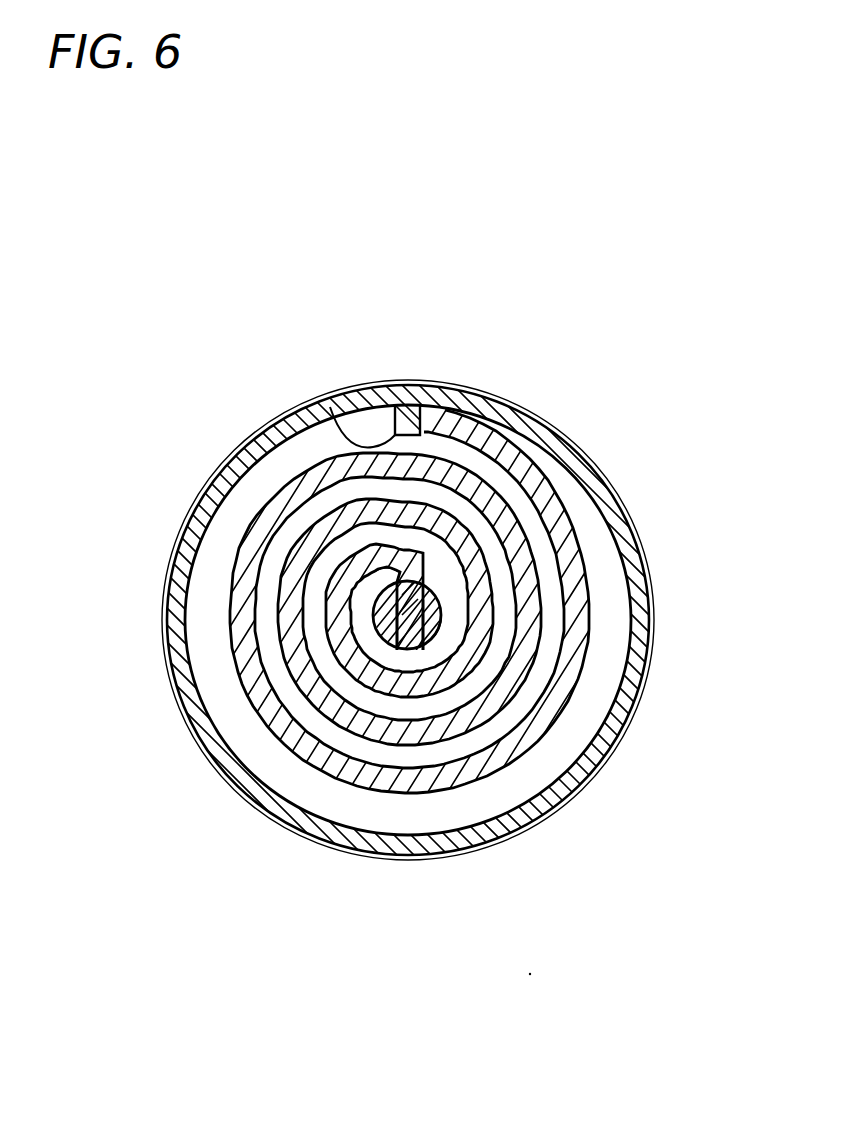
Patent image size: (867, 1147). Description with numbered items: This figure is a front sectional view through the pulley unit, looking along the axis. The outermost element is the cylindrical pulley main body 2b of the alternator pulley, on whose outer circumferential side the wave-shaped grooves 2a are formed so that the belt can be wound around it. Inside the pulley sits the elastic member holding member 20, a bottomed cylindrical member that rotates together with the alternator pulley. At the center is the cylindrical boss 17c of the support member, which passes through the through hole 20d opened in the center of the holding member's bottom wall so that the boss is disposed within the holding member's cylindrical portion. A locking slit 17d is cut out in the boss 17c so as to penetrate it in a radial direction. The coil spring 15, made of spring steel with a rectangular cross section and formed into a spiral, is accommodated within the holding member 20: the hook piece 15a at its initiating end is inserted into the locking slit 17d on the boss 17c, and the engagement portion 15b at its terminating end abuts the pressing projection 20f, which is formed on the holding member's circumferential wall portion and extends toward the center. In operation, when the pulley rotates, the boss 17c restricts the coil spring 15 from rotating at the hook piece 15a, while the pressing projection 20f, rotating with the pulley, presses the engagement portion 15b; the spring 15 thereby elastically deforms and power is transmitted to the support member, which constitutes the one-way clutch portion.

The wave-shaped grooves 2a is at (540, 434).
The pulley main body 2b is at (283, 464).
The coil spring 15 is at (567, 538).
The hook piece 15a is at (410, 606).
The engagement portion 15b is at (421, 398).
The cylindrical boss 17c is at (445, 634).
The locking slit 17d is at (412, 645).
The elastic member holding member 20 is at (384, 387).
The through hole 20d is at (440, 637).
The pressing projection 20f is at (328, 402).